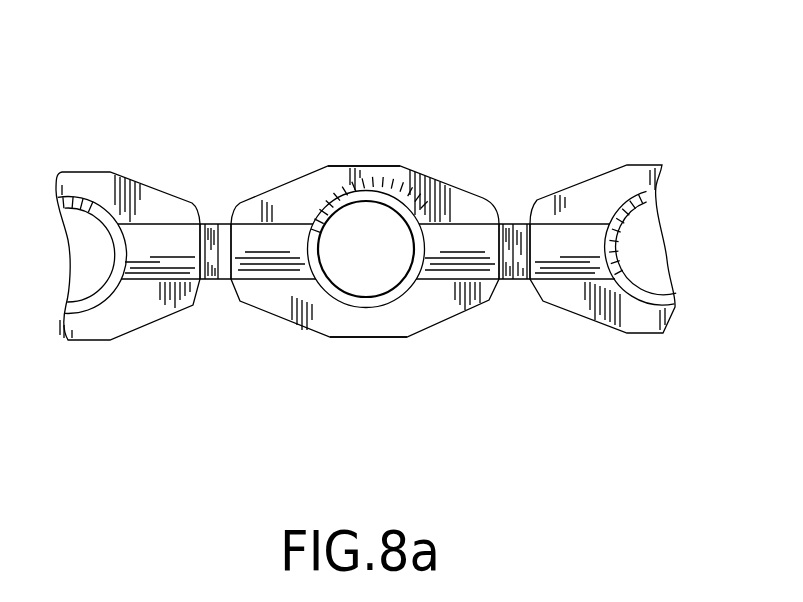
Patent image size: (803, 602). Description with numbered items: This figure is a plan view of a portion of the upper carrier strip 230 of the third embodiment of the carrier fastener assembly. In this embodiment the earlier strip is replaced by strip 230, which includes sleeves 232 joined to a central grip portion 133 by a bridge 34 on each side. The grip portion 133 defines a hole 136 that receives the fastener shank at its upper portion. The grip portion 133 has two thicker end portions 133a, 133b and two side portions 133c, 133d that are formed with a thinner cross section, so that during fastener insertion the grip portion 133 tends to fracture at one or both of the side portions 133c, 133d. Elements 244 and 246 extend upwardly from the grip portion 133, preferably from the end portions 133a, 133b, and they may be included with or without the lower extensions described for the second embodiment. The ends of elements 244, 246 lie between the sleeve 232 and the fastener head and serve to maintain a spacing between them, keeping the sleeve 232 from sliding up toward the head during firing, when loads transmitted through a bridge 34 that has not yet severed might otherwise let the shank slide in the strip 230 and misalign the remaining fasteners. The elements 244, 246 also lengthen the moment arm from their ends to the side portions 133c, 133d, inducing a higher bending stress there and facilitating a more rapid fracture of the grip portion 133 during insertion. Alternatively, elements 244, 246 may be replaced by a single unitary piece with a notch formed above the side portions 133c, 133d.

The bridge 34 is at (203, 224).
The grip portion 133 is at (217, 224).
The end portion 133a is at (503, 245).
The end portion 133b is at (230, 240).
The side portion 133c is at (386, 167).
The side portion 133d is at (362, 337).
The hole 136 is at (362, 275).
The strip 230 is at (482, 135).
The sleeve 232 is at (365, 135).
The element 244 is at (290, 245).
The element 246 is at (450, 232).